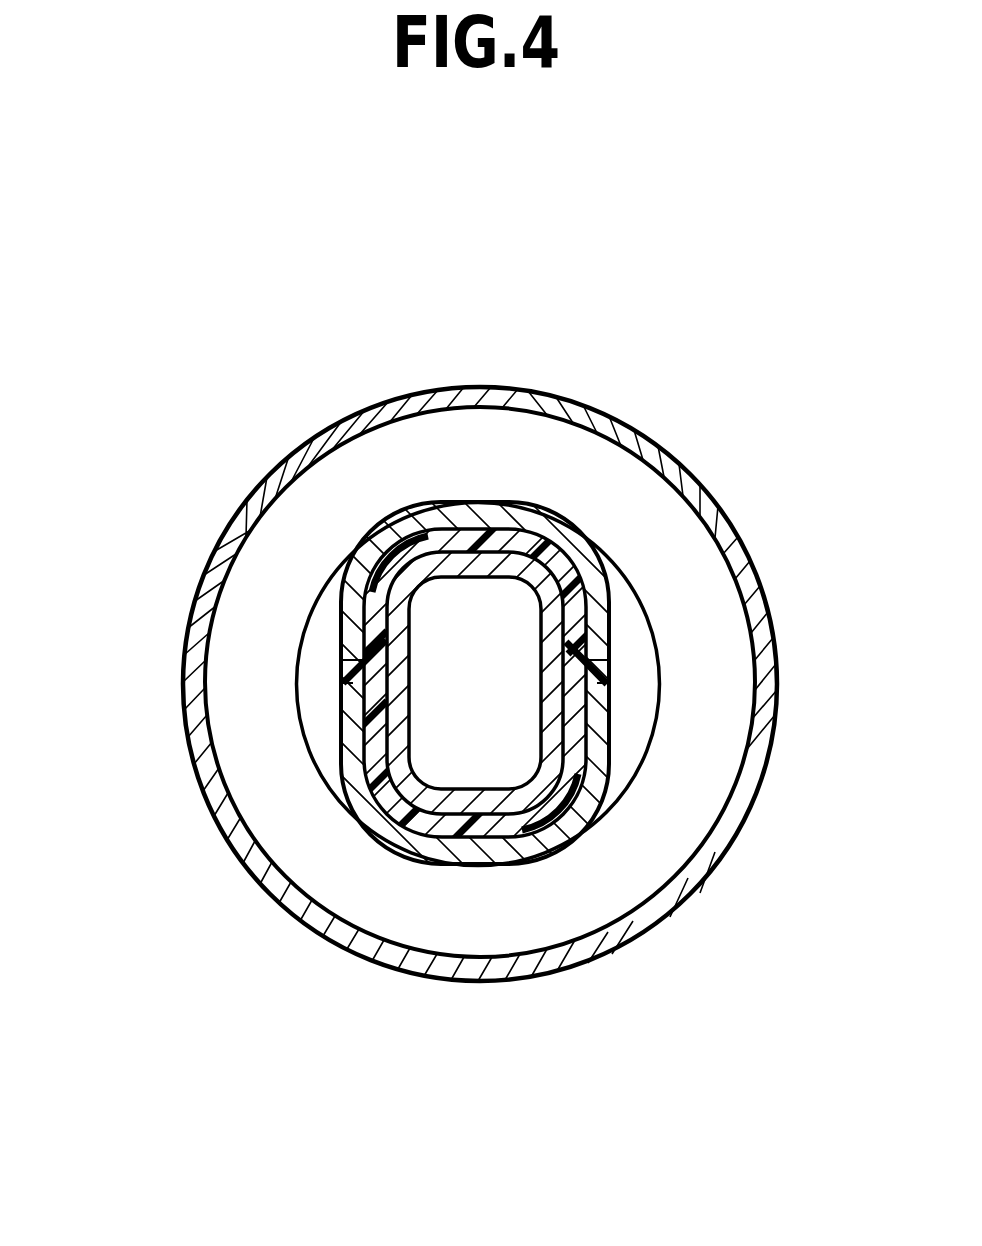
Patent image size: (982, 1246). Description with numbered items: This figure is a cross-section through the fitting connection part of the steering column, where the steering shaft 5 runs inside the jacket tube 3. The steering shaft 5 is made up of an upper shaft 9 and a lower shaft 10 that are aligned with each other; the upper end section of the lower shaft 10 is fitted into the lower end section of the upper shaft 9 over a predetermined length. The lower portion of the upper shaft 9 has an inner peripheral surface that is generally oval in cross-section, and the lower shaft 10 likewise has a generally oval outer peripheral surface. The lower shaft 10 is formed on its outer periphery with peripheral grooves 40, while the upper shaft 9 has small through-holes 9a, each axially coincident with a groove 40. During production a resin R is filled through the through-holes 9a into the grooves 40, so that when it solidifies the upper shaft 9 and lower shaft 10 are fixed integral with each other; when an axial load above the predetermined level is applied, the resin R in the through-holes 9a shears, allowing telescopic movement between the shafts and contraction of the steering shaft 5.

The jacket tube 3 is at (577, 395).
The upper shaft 9 is at (557, 537).
The small through-holes 9a is at (342, 670).
The peripheral grooves 40 is at (463, 552).
The steering shaft 5 is at (562, 828).
The resin R is at (577, 592).
The lower shaft 10 is at (428, 792).